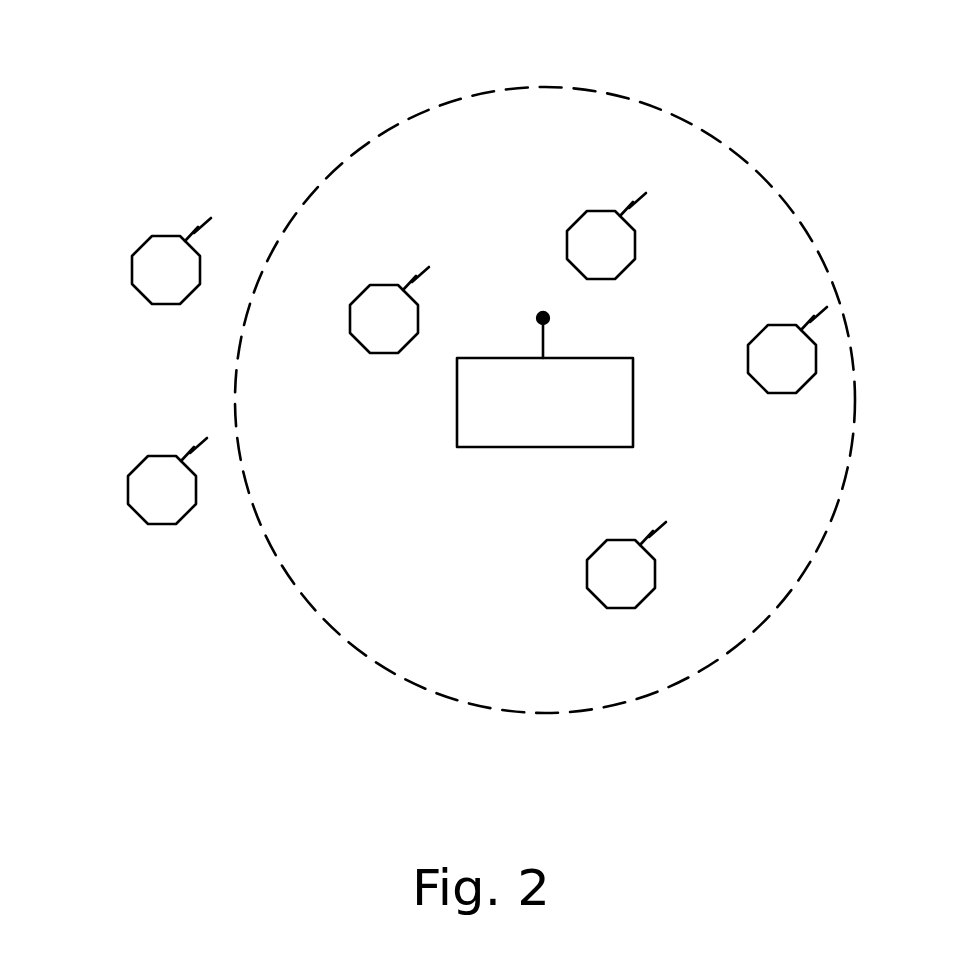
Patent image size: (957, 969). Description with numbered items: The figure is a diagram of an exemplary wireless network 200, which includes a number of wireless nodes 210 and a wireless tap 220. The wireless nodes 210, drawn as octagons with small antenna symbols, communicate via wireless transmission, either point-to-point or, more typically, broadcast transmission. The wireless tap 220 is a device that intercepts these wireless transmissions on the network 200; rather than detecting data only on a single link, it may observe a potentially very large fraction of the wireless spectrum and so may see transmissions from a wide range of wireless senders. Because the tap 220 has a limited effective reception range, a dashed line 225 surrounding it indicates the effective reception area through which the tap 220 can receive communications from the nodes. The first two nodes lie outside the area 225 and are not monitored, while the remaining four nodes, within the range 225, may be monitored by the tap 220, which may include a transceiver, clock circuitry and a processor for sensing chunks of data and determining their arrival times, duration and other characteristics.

The wireless network 200 is at (853, 694).
The wireless nodes 210 is at (140, 262).
The wireless tap 220 is at (500, 428).
The effective reception area 225 is at (455, 100).